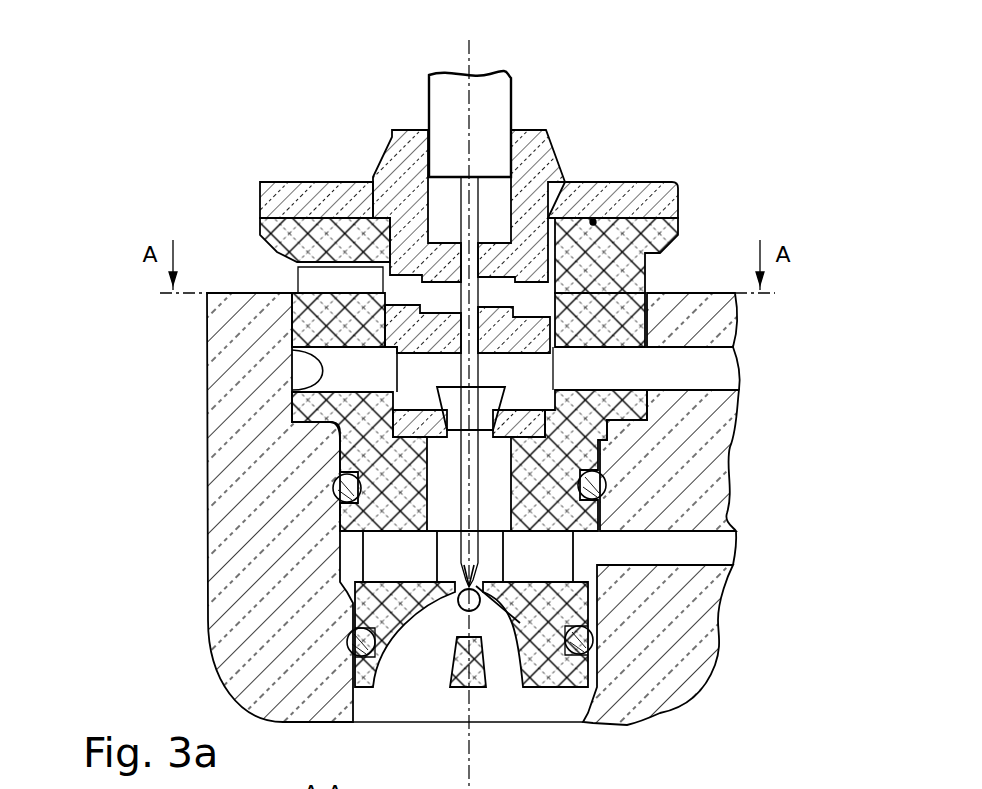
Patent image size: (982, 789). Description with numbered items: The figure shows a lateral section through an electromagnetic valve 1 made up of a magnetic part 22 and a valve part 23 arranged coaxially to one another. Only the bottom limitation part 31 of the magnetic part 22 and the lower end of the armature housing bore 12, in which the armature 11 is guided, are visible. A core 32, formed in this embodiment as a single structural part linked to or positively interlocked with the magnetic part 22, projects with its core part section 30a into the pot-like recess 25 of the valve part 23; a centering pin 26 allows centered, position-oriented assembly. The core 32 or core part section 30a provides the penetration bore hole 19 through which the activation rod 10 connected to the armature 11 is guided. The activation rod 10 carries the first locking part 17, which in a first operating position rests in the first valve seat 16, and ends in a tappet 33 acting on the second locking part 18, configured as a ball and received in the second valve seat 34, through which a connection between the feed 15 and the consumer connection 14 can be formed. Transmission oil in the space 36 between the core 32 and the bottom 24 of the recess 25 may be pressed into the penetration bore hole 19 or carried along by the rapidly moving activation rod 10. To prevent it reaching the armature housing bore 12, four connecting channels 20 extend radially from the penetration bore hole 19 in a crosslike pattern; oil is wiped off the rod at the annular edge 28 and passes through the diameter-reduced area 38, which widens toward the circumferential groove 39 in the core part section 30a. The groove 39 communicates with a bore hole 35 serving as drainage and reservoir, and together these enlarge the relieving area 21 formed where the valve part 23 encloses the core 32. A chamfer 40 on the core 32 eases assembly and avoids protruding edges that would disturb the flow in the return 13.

The electromagnetic valve 1 is at (200, 84).
The activation rod 10 is at (625, 380).
The armature 11 is at (497, 100).
The armature housing bore 12 is at (513, 192).
The return 13 is at (713, 367).
The consumer connection 14 is at (713, 547).
The feed 15 is at (433, 677).
The first valve seat 16 is at (497, 420).
The first locking part 17 is at (420, 397).
The second locking part 18 is at (467, 590).
The penetration bore hole 19 is at (395, 330).
The connecting channel 20 is at (560, 288).
The relieving area 21 is at (385, 292).
The magnetic part 22 is at (318, 156).
The valve part 23 is at (170, 689).
The bottom 24 is at (440, 395).
The pot-like recess 25 is at (392, 390).
The centering pin 26 is at (596, 222).
The edge 28 is at (483, 287).
The core part section 30a is at (407, 257).
The bottom limitation part 31 is at (700, 223).
The core 32 is at (672, 183).
The tappet 33 is at (467, 577).
The second valve seat 34 is at (480, 587).
The bore hole 35 is at (320, 270).
The space 36 is at (527, 387).
The diameter-reduced area 38 is at (625, 320).
The circumferential groove 39 is at (405, 315).
The chamfer 40 is at (630, 368).